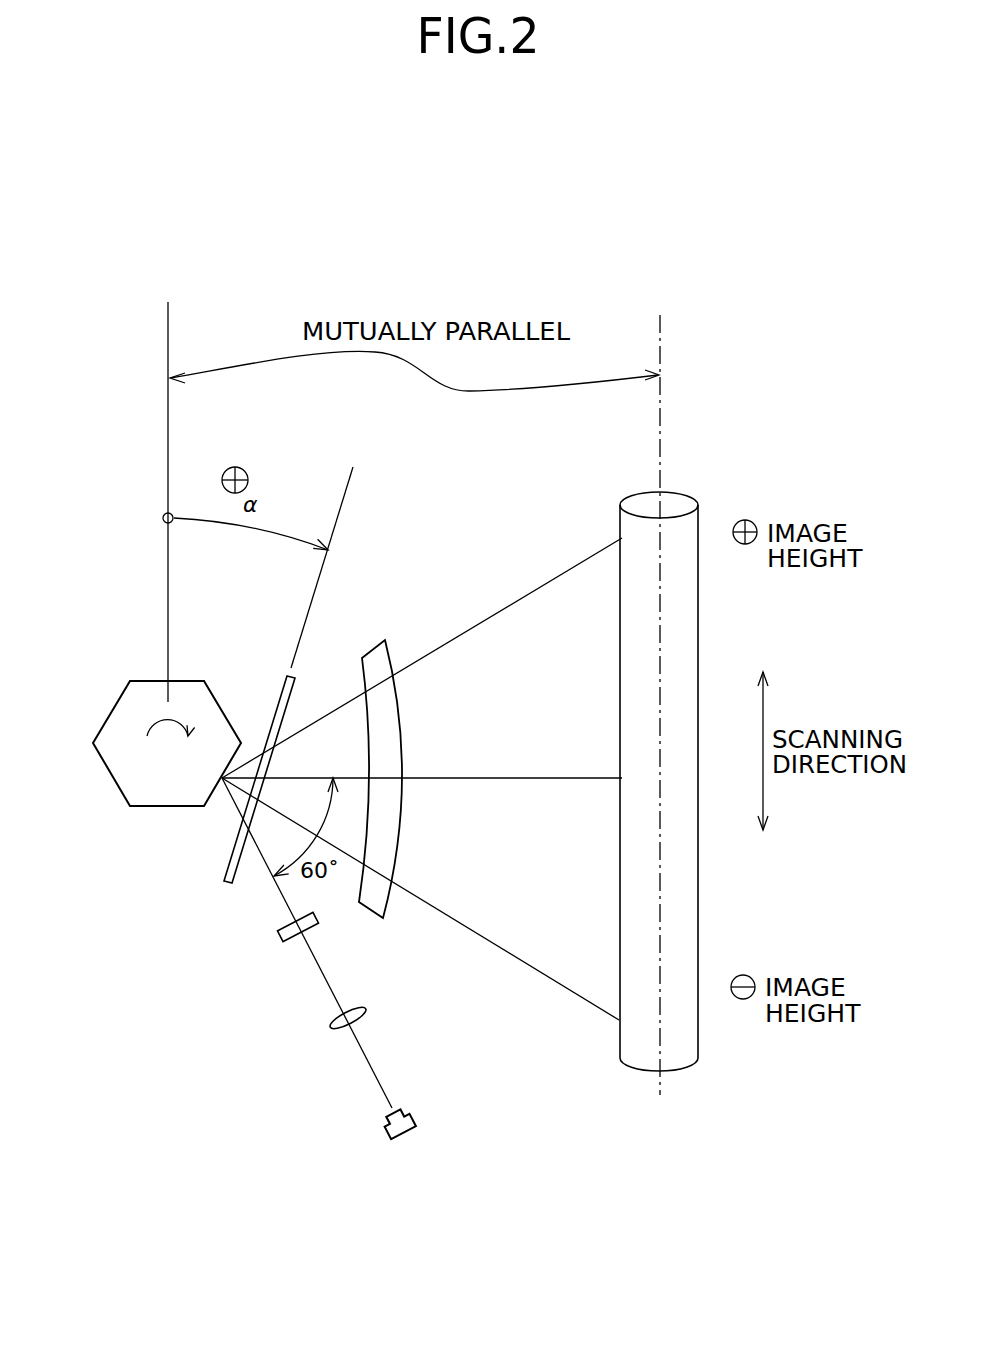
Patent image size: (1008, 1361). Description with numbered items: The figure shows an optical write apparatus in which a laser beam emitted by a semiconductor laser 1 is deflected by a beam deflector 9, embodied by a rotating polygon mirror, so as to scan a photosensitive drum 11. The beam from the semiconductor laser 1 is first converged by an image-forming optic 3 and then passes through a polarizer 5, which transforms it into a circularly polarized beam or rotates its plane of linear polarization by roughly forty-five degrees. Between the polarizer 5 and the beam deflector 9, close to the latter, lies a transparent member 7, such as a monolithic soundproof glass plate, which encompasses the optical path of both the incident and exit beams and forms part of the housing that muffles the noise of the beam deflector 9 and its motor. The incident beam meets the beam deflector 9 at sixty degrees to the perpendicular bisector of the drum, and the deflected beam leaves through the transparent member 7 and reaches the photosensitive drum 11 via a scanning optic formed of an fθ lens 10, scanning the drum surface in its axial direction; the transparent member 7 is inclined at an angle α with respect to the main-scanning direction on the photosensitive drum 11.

The semiconductor laser 1 is at (414, 1118).
The image-forming optic 3 is at (330, 1030).
The polarizer 5 is at (282, 940).
The transparent member 7 is at (225, 866).
The beam deflector 9 is at (113, 778).
The fθ lens 10 is at (369, 652).
The photosensitive drum 11 is at (698, 1045).